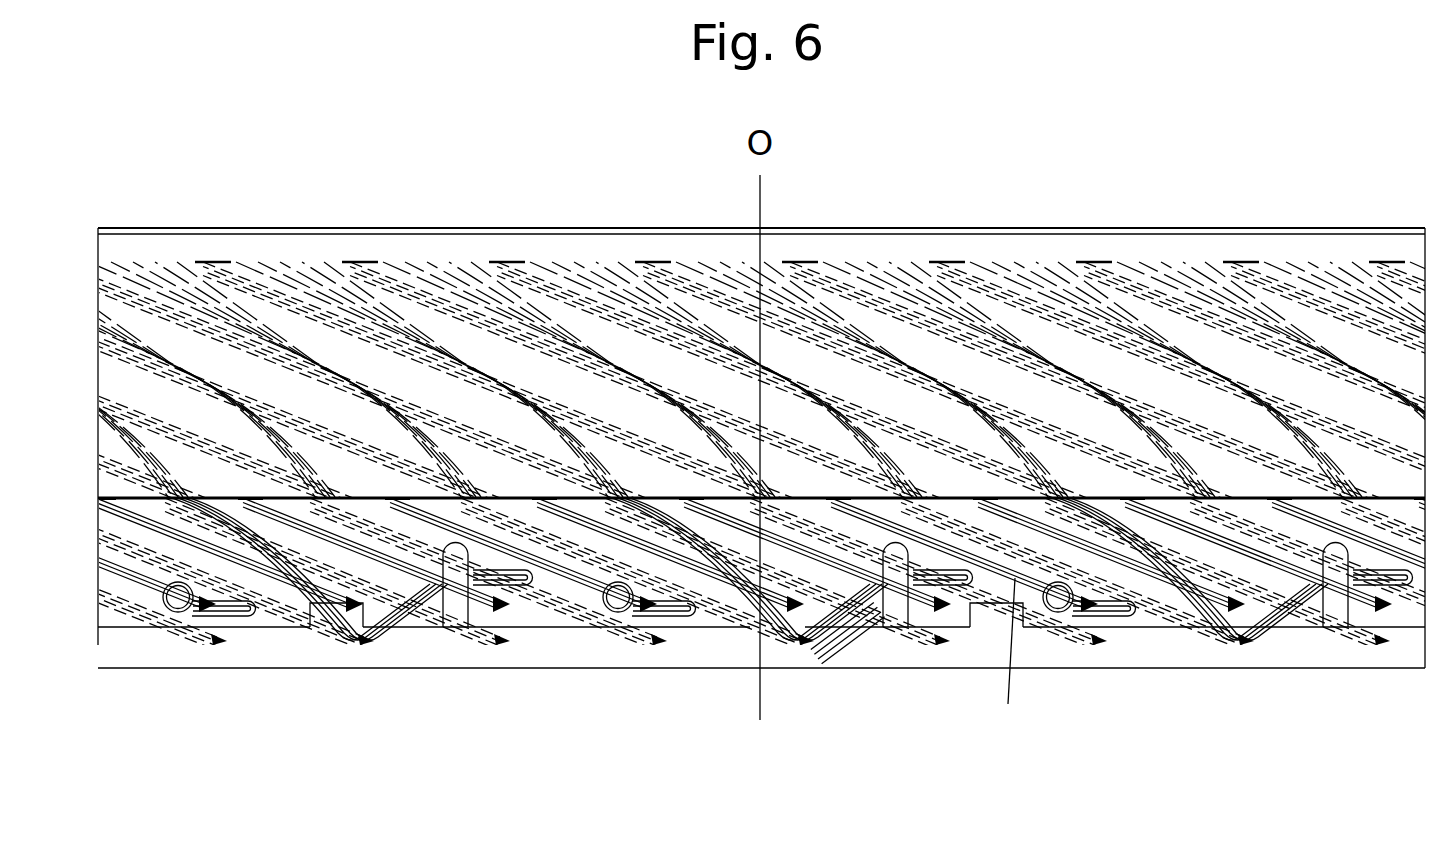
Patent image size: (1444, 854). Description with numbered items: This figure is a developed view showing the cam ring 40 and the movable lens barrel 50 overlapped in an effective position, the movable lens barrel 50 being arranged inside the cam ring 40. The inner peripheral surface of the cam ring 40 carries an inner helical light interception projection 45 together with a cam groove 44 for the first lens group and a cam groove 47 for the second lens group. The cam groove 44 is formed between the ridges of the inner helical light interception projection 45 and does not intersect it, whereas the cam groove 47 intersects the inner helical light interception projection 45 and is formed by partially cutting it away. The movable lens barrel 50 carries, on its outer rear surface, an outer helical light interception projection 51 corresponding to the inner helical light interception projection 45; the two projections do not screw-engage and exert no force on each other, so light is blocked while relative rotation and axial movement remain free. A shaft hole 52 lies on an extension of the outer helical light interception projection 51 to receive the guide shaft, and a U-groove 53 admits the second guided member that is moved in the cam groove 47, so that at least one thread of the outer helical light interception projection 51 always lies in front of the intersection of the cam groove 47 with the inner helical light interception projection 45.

The cam ring 40 is at (1367, 650).
The cam groove for the first lens group 44 is at (1125, 603).
The inner helical light interception projection 45 is at (737, 620).
The cam groove for the second lens group 47 is at (843, 620).
The movable lens barrel 50 is at (1305, 622).
The outer helical light interception projection 51 is at (807, 632).
The shaft hole 52 is at (1058, 625).
The U-groove 53 is at (893, 610).